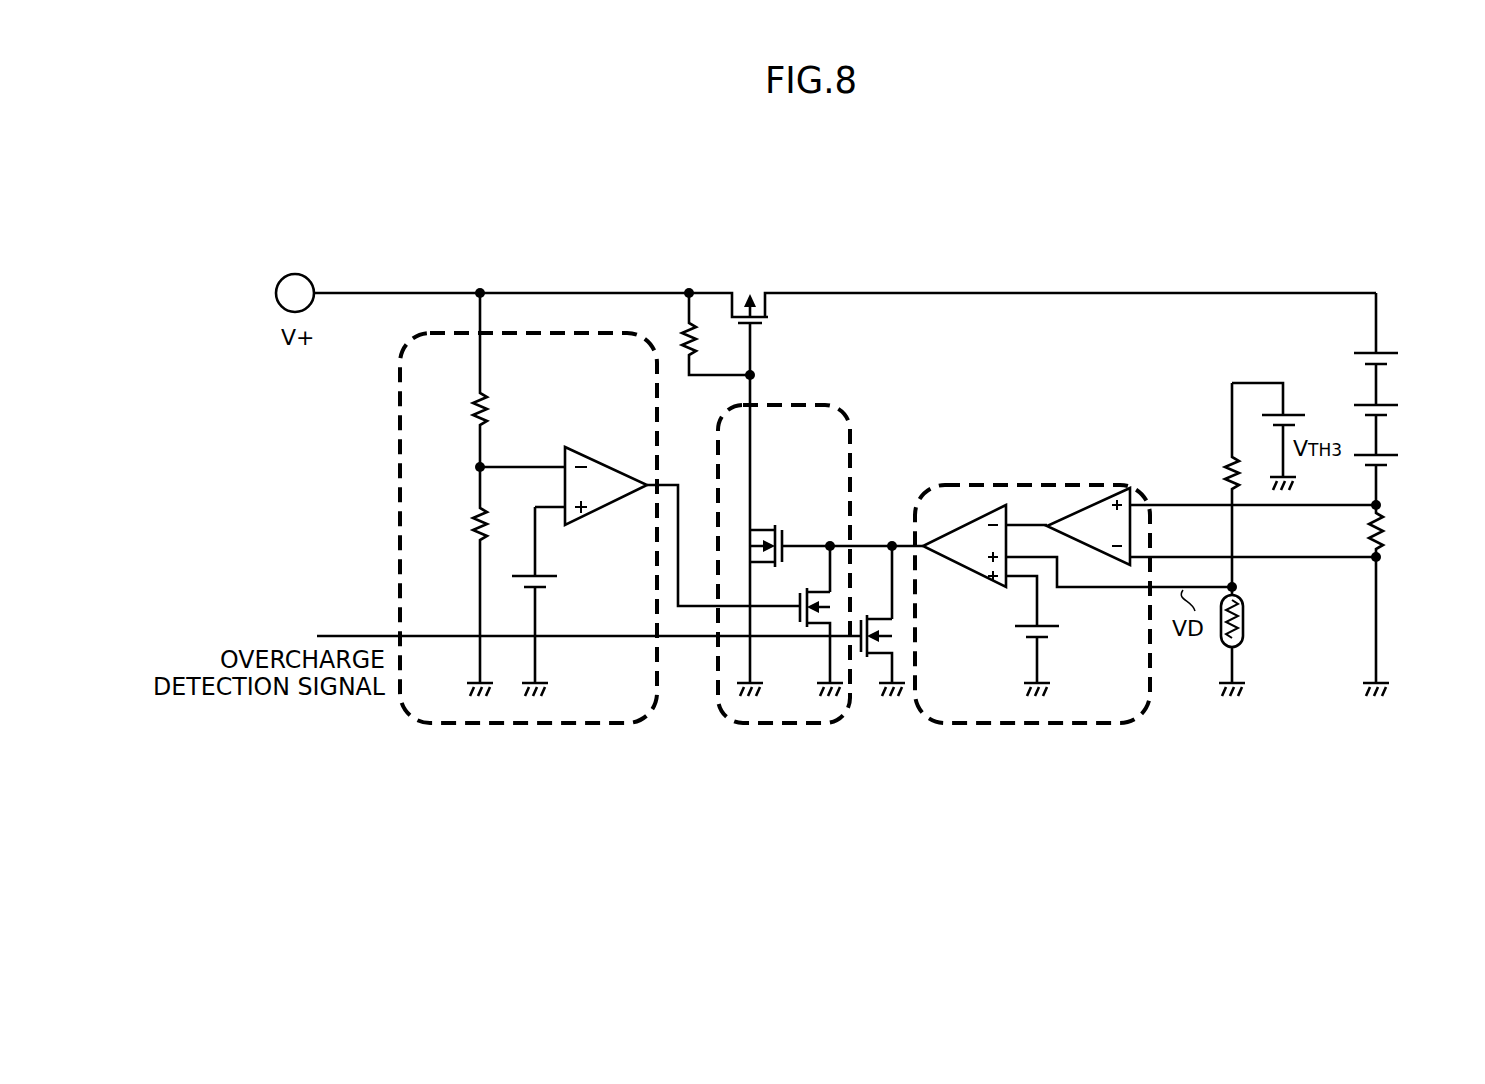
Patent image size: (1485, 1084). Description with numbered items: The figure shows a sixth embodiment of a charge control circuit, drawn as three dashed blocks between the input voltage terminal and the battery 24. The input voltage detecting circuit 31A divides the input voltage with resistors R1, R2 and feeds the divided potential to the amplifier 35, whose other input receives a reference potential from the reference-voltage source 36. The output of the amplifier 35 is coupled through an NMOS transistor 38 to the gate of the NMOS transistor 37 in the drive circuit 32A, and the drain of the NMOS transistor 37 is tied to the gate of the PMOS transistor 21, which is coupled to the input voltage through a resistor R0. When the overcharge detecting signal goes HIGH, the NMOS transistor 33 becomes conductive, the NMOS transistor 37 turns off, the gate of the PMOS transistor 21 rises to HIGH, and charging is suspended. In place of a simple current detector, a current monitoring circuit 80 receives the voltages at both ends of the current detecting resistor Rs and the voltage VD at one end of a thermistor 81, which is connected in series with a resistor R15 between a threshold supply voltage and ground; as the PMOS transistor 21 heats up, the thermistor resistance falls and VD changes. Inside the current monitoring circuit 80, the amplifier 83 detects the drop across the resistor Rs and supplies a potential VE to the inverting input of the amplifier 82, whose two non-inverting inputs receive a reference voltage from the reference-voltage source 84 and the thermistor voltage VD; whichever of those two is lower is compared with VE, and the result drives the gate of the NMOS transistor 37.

The PMOS transistor 21 is at (780, 313).
The secondary battery 24 is at (1412, 384).
The input voltage detecting circuit 31A is at (406, 713).
The drive circuit 32A is at (722, 714).
The NMOS transistor 33 is at (867, 680).
The amplifier 35 is at (614, 466).
The reference-voltage source 36 is at (562, 589).
The NMOS transistor 37 is at (792, 525).
The NMOS transistor 38 is at (793, 625).
The current monitoring circuit 80 is at (966, 725).
The thermistor 81 is at (1246, 615).
The amplifier 82 is at (960, 567).
The amplifier 83 is at (1099, 558).
The reference-voltage source 84 is at (1066, 642).
The resistor R0 is at (695, 334).
The resistor R1 is at (500, 380).
The resistor R2 is at (497, 581).
The resistor R15 is at (1204, 485).
The current detecting resistor Rs is at (1394, 600).